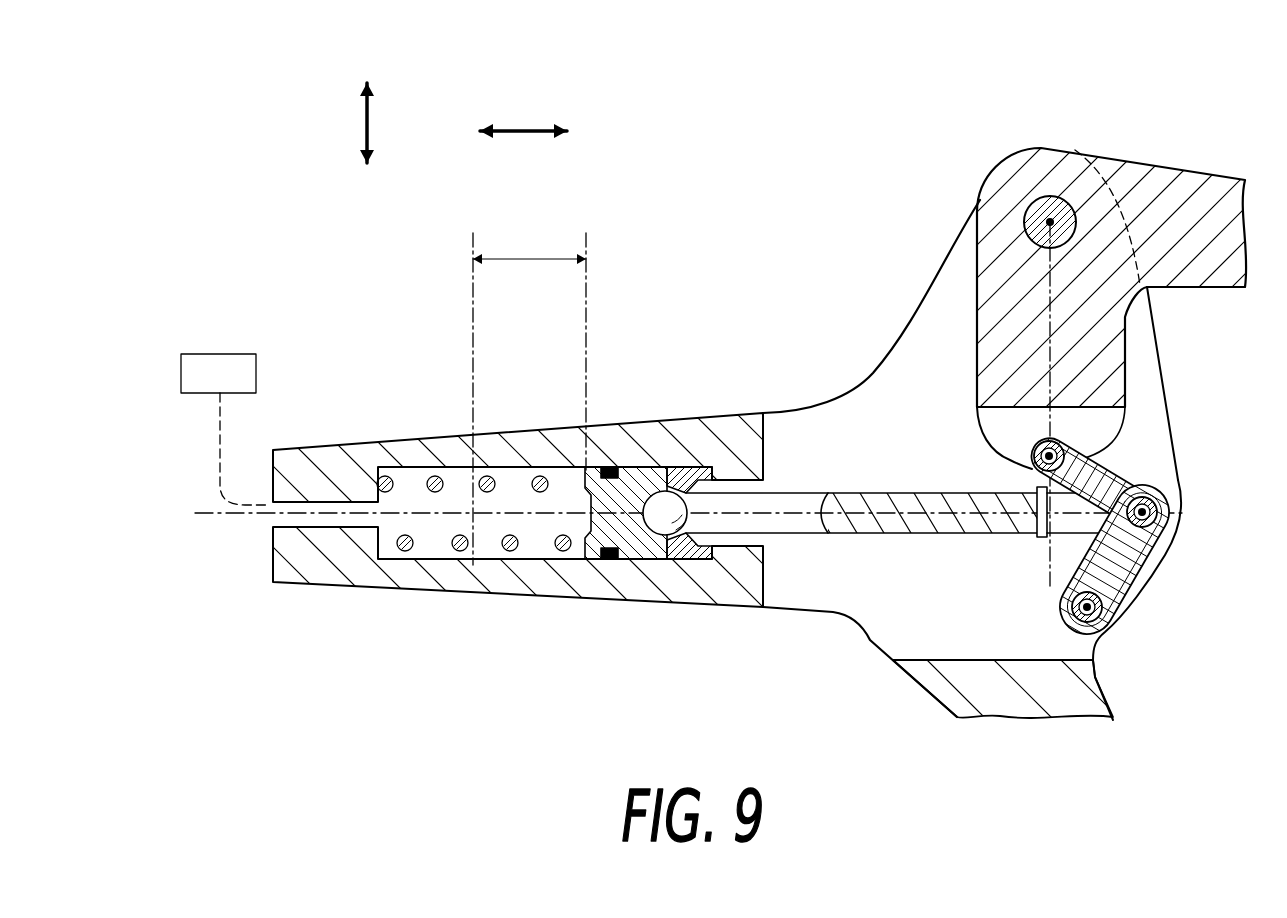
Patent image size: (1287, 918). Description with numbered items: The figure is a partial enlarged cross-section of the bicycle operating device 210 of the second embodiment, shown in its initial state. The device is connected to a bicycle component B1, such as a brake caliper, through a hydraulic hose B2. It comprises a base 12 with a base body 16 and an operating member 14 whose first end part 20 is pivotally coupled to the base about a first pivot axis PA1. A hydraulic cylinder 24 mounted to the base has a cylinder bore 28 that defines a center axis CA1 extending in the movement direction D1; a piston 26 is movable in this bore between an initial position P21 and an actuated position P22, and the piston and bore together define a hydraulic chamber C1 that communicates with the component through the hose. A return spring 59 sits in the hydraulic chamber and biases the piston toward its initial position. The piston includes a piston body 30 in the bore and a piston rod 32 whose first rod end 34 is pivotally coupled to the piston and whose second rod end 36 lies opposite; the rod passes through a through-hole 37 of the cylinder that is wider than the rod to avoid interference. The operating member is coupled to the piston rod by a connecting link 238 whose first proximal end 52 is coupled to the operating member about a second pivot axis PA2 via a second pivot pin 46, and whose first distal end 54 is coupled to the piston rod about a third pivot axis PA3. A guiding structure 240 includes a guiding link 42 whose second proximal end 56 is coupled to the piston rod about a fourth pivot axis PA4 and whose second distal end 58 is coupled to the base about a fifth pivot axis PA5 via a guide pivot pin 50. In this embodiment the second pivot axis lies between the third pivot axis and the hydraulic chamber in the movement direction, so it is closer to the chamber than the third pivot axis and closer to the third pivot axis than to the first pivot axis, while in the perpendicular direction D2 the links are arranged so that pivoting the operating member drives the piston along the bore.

The base 12 is at (1004, 458).
The operating member 14 is at (1177, 162).
The base body 16 is at (1153, 338).
The first end part 20 is at (1044, 347).
The hydraulic cylinder 24 is at (447, 568).
The piston 26 is at (677, 682).
The cylinder bore 28 is at (430, 557).
The piston body 30 is at (644, 562).
The piston rod 32 is at (803, 535).
The first rod end 34 is at (664, 490).
The second rod end 36 is at (1070, 528).
The through-hole 37 is at (779, 480).
The guiding link 42 is at (1130, 562).
The second pivot pin 46 is at (1046, 441).
The guide pivot pin 50 is at (1143, 637).
The first proximal end 52 is at (1040, 471).
The first distal end 54 is at (1150, 547).
The second proximal end 56 is at (1132, 486).
The second distal end 58 is at (1080, 630).
The return spring 59 is at (518, 550).
The bicycle operating device 210 is at (718, 150).
The connecting link 238 is at (1113, 462).
The guiding structure 240 is at (1162, 581).
The bicycle component B1 is at (218, 373).
The hydraulic hose B2 is at (230, 437).
The hydraulic chamber C1 is at (417, 490).
The center axis CA1 is at (213, 515).
The movement direction D1 is at (530, 130).
The perpendicular direction D2 is at (364, 117).
The initial position P21 is at (587, 243).
The actuated position P22 is at (473, 240).
The first pivot axis PA1 is at (1050, 220).
The second pivot axis PA2 is at (1035, 456).
The third pivot axis PA3 is at (1200, 499).
The fourth pivot axis PA4 is at (1158, 508).
The fifth pivot axis PA5 is at (1089, 610).